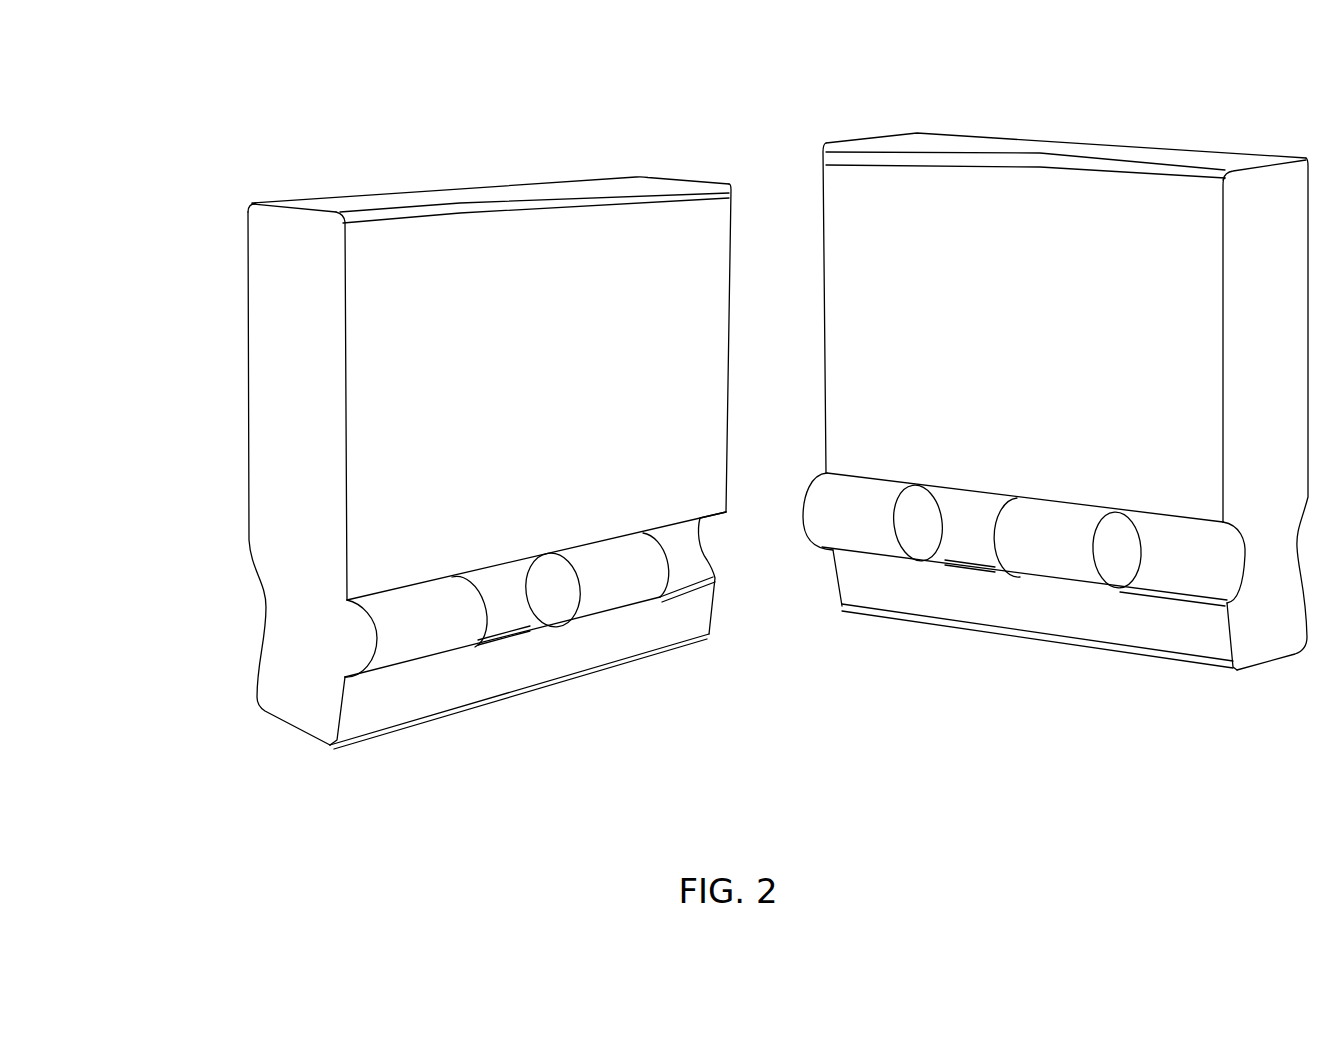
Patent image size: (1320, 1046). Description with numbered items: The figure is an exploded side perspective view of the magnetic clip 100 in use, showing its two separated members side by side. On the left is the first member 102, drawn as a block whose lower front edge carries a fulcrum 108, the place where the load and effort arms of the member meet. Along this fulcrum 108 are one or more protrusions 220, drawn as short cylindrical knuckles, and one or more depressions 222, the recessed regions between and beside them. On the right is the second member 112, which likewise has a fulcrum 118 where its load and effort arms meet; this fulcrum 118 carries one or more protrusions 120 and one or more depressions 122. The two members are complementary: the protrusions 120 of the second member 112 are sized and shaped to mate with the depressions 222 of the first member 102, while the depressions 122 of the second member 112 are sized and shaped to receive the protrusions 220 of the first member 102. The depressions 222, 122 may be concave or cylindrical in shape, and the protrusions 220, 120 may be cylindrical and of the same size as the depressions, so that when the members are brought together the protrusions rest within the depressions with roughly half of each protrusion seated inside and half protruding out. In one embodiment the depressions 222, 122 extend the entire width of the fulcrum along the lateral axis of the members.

The magnetic clip 100 is at (699, 40).
The first member 102 is at (241, 202).
The fulcrum 108 is at (368, 631).
The protrusions 220 is at (412, 600).
The depressions 222 is at (680, 577).
The second member 112 is at (819, 158).
The fulcrum 118 is at (819, 489).
The protrusions 120 is at (870, 488).
The depressions 122 is at (960, 548).